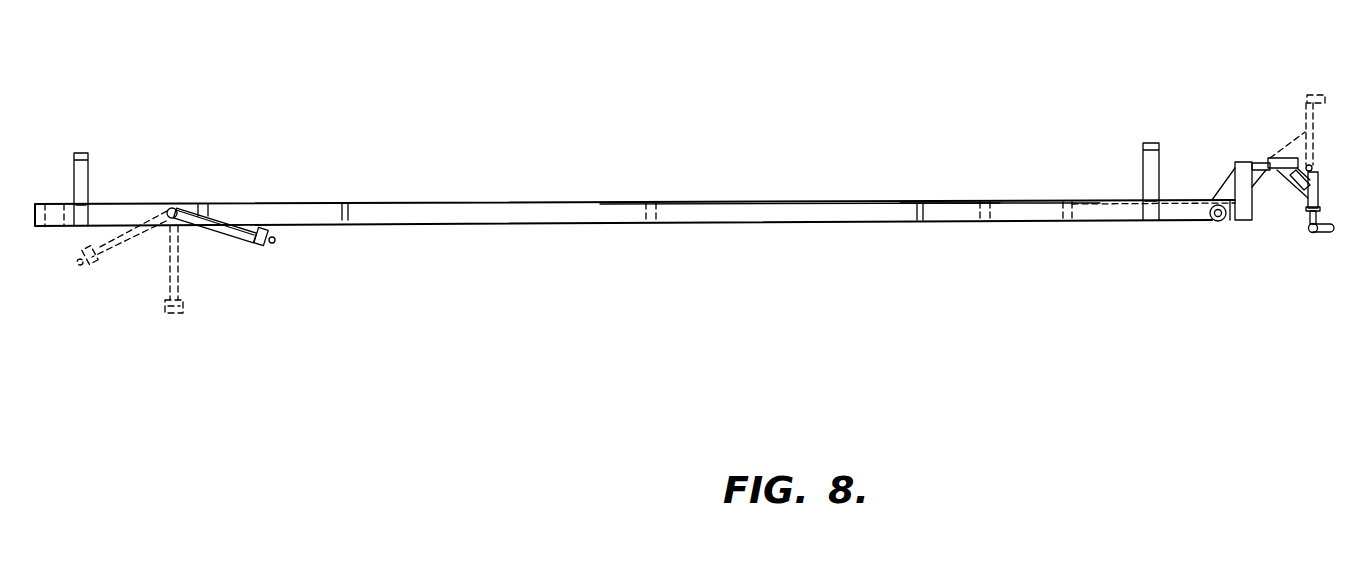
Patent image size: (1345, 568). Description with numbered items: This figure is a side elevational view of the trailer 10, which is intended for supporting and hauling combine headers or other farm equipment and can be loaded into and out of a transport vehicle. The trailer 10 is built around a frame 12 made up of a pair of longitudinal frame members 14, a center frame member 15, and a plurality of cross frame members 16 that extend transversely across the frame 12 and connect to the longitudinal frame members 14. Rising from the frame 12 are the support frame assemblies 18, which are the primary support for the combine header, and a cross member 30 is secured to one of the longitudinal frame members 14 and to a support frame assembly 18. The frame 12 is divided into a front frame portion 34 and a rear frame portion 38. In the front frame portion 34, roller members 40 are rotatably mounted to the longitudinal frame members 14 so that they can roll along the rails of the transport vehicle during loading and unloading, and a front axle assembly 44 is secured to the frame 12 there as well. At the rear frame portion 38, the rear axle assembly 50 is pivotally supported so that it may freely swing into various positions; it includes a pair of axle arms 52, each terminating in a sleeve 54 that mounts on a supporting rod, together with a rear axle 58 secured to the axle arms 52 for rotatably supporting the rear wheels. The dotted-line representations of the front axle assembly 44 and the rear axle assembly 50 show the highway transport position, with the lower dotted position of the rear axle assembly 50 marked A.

The trailer 10 is at (929, 120).
The frame 12 is at (776, 190).
The longitudinal frame member 14 is at (456, 213).
The center frame member 15 is at (1086, 200).
The cross frame member 16 is at (64, 226).
The support frame assembly 18 is at (100, 168).
The cross member 30 is at (83, 218).
The front frame portion 34 is at (1201, 252).
The rear frame portion 38 is at (222, 190).
The roller member 40 is at (1222, 222).
The front axle assembly 44 is at (1277, 207).
The rear axle assembly 50 is at (182, 281).
The axle arm 52 is at (227, 212).
The sleeve 54 is at (171, 208).
The rear axle 58 is at (266, 244).
The position A is at (155, 304).